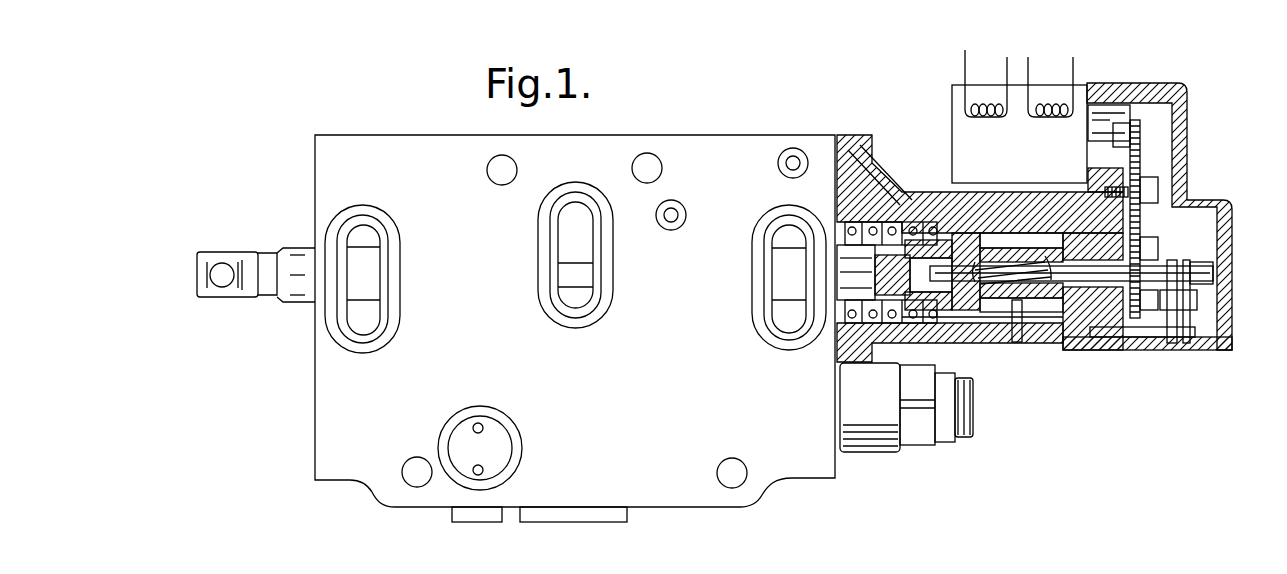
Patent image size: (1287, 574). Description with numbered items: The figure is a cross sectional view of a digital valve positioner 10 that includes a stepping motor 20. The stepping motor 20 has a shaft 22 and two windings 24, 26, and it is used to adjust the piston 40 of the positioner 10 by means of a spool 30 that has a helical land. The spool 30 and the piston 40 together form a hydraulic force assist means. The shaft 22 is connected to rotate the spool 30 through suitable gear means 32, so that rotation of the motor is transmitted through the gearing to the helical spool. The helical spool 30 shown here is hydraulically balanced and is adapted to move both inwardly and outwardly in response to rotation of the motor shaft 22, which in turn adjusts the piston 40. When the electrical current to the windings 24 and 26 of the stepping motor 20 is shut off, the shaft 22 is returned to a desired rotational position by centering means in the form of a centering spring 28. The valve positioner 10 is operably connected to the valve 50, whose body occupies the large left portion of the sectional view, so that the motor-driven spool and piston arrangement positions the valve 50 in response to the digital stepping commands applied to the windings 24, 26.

The digital valve positioner 10 is at (951, 87).
The stepping motor 20 is at (1000, 158).
The shaft 22 is at (1095, 140).
The winding 24 is at (994, 100).
The winding 26 is at (1052, 100).
The centering spring 28 is at (1172, 322).
The spool 30 is at (1040, 292).
The gear means 32 is at (1143, 160).
The piston 40 is at (965, 292).
The valve 50 is at (722, 150).